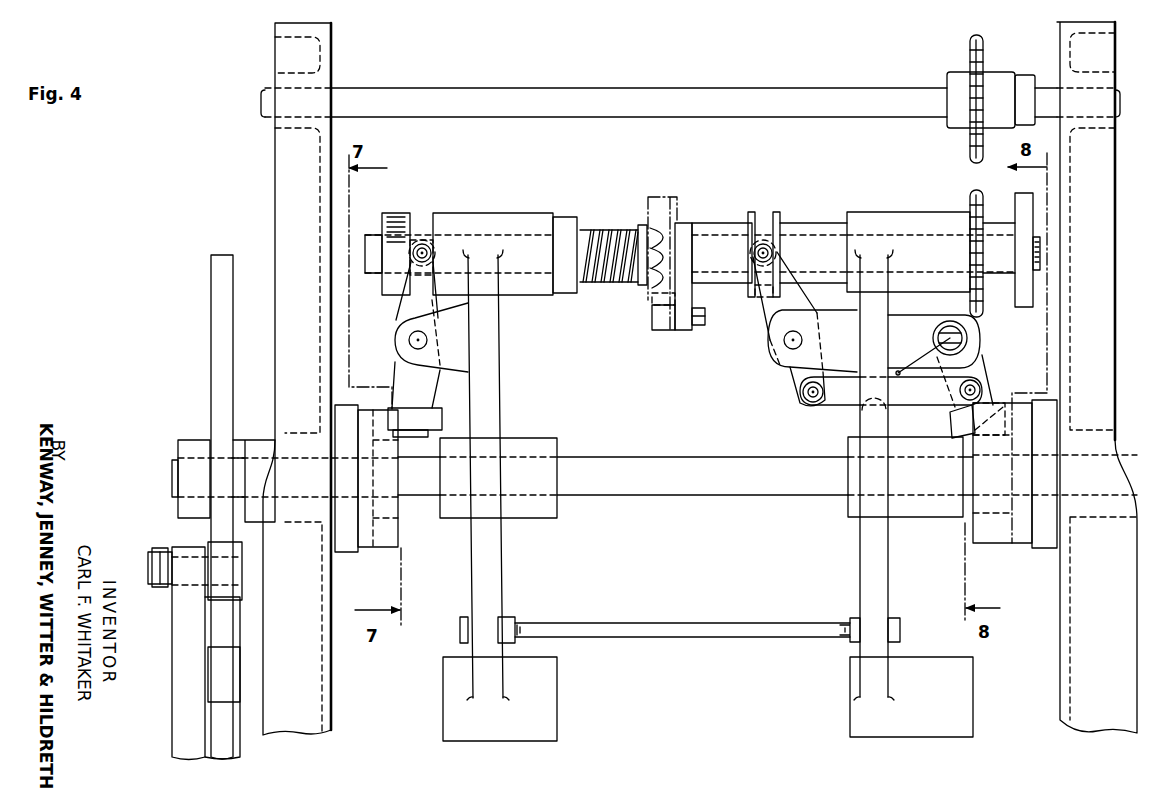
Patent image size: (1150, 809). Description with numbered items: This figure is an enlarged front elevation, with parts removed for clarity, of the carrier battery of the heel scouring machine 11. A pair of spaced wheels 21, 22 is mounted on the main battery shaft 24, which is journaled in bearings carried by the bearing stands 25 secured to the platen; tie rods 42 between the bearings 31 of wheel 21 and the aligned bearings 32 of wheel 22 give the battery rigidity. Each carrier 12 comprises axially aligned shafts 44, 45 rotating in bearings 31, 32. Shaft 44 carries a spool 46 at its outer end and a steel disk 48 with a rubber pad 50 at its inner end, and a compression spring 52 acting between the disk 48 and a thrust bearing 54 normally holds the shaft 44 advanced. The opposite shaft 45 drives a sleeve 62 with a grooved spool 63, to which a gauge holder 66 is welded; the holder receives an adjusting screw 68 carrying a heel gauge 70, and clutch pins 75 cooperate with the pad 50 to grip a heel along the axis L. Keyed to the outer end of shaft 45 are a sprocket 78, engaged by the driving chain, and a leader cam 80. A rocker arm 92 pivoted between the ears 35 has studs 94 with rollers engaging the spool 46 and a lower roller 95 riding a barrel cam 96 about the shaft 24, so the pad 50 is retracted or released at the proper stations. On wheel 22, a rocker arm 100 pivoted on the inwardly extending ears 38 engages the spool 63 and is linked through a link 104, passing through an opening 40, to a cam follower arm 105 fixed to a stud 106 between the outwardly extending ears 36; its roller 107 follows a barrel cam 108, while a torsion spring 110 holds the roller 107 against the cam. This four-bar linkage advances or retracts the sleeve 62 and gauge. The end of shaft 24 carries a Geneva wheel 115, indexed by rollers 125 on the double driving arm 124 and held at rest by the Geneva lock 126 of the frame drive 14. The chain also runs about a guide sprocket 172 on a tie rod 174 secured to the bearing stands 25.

The apparatus 11 is at (447, 612).
The carrier 12 is at (646, 321).
The frame 14 is at (210, 352).
The wheel 21 is at (493, 572).
The wheel 22 is at (860, 551).
The main battery shaft 24 is at (685, 477).
The bearing stand 25 is at (275, 177).
The bearing 31 is at (500, 491).
The bearing 32 is at (911, 493).
The ears 35 is at (394, 365).
The ears 36 is at (933, 341).
The ears 38 is at (812, 341).
The opening 40 is at (896, 398).
The tie rod 42 is at (745, 638).
The shaft 44 is at (478, 235).
The shaft 45 is at (856, 235).
The spool 46 is at (398, 212).
The steel disk 48 is at (637, 227).
The rubber pad 50 is at (648, 205).
The compression spring 52 is at (606, 285).
The thrust bearing 54 is at (550, 215).
The sleeve 62 is at (722, 253).
The spool 63 is at (768, 216).
The gauge holder 66 is at (683, 330).
The adjusting screw 68 is at (706, 316).
The heel gauge 70 is at (670, 201).
The clutch pin 75 is at (650, 284).
The sprocket 78 is at (968, 196).
The leader cam 80 is at (1018, 195).
The rocker arm 92 is at (396, 316).
The stud 94 is at (427, 240).
The roller 95 is at (455, 400).
The barrel cam 96 is at (398, 529).
The rocker arm 100 is at (784, 301).
The link 104 is at (840, 402).
The cam follower arm 105 is at (980, 367).
The stud 106 is at (963, 330).
The roller 107 is at (950, 418).
The barrel cam 108 is at (988, 542).
The torsion spring 110 is at (930, 341).
The Geneva wheel 115 is at (210, 285).
The double driving arm 124 is at (172, 548).
The offset roller 125 is at (242, 580).
The Geneva lock 126 is at (233, 742).
The guide sprocket 172 is at (968, 50).
The tie rod 174 is at (694, 102).
The axis L is at (682, 212).